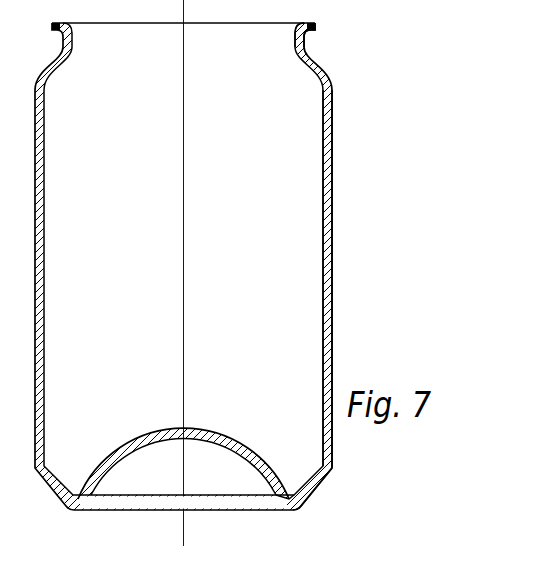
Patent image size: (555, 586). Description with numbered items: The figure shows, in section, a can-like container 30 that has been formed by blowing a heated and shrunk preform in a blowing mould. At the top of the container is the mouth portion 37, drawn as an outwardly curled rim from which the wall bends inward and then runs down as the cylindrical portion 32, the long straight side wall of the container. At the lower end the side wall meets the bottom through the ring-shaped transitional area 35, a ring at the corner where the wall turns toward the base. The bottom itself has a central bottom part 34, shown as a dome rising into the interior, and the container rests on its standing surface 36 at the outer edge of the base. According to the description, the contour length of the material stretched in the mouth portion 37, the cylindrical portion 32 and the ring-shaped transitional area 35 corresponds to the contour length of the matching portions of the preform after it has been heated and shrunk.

The can-like container 30 is at (334, 222).
The cylindrical portion 32 is at (331, 305).
The central bottom part 34 is at (218, 431).
The ring-shaped transitional area 35 is at (282, 506).
The standing surface 36 is at (300, 513).
The mouth portion 37 is at (306, 56).